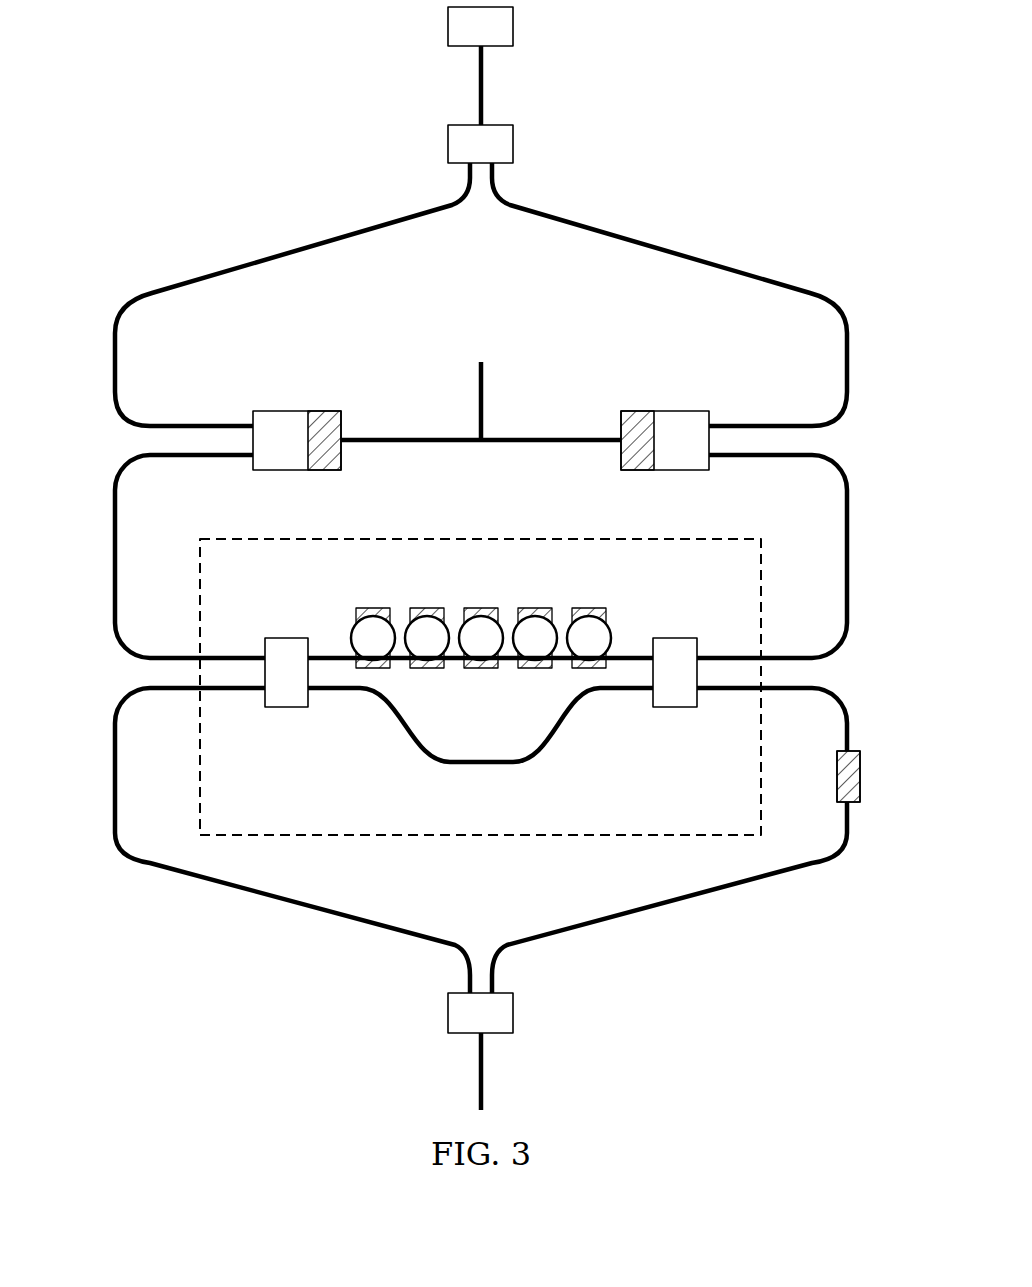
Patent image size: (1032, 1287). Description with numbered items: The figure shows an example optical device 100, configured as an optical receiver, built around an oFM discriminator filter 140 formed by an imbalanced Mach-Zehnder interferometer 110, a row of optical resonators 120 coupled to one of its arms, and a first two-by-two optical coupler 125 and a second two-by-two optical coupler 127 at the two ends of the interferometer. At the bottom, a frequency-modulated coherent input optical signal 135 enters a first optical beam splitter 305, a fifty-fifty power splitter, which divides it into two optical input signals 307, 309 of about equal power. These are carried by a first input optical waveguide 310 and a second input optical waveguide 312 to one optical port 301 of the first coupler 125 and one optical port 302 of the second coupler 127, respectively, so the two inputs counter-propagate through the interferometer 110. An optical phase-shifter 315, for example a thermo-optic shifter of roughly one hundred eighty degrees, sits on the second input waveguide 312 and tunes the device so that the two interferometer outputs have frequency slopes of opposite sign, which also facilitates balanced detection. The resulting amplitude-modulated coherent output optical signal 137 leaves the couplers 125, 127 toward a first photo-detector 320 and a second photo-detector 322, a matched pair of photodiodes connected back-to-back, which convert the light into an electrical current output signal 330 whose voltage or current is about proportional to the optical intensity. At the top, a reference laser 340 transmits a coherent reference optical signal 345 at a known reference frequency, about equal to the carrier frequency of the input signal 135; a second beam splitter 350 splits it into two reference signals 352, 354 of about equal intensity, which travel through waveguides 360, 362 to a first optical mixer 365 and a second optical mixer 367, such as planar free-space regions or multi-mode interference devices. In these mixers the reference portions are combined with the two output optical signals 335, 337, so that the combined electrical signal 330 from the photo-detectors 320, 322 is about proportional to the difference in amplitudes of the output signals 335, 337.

The optical device 100 is at (708, 80).
The imbalanced Mach-Zehnder interferometer 110 is at (310, 771).
The optical resonators 120 is at (347, 598).
The first 2×2 optical coupler 125 is at (286, 636).
The second 2×2 optical coupler 127 is at (680, 636).
The frequency-modulated coherent input optical signal 135 is at (470, 1055).
The amplitude-modulated coherent output optical signal 137 is at (192, 649).
The oFM discriminator filter 140 is at (548, 536).
The optical port 301 is at (264, 696).
The optical port 302 is at (698, 696).
The first optical beam splitter 305 is at (448, 1014).
The optical input signal 307 is at (356, 932).
The optical input signal 309 is at (606, 932).
The first input optical waveguide 310 is at (246, 896).
The second input optical waveguide 312 is at (714, 896).
The optical phase-shifter 315 is at (862, 778).
The first photo-detector 320 is at (261, 480).
The second photo-detector 322 is at (701, 480).
The electrical current output signal 330 is at (470, 385).
The output optical signal 335 is at (858, 552).
The output optical signal 337 is at (103, 552).
The reference laser 340 is at (448, 22).
The coherent reference optical signal 345 is at (470, 101).
The second beam splitter 350 is at (448, 140).
The reference signal 352 is at (356, 226).
The reference signal 354 is at (606, 226).
The waveguide 360 is at (224, 268).
The waveguide 362 is at (738, 268).
The first optical mixer 365 is at (278, 420).
The second optical mixer 367 is at (684, 420).